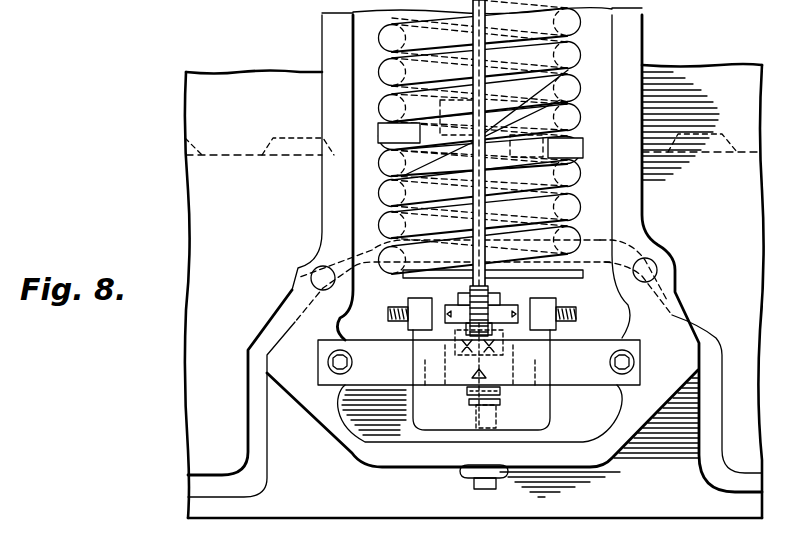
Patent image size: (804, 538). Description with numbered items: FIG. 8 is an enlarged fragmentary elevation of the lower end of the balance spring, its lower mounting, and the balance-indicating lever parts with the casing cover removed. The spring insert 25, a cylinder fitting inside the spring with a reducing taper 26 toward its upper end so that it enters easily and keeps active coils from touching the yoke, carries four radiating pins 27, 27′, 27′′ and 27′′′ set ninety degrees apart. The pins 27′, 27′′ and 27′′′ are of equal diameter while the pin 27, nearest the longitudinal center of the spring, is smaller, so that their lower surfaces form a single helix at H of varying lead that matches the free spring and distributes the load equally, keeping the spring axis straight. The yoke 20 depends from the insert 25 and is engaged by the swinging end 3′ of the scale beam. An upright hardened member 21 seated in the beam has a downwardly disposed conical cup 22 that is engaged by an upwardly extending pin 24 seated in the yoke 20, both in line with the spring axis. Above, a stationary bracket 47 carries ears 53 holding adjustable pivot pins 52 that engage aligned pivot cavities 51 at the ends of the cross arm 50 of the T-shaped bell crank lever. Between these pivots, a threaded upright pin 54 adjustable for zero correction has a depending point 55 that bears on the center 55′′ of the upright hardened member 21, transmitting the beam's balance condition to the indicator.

The single helix H is at (642, 63).
The spring insert 25 is at (582, 226).
The reducing taper 26 is at (420, 113).
The pin 27 is at (480, 128).
The pin 27′ is at (576, 140).
The pin 27′′ is at (420, 172).
The pin 27′′′ is at (378, 130).
The stationary bracket 47 is at (570, 376).
The cross arm 50 is at (463, 311).
The pivot pins 52 is at (505, 311).
The ears 53 is at (408, 300).
The depending point 55 is at (470, 345).
The center 55′′ is at (493, 374).
The pivot cavities 51 is at (437, 365).
The upright pin 54 is at (523, 365).
The cup 22 is at (548, 393).
The swinging end 3′ is at (505, 398).
The upwardly extending pin 24 is at (478, 418).
The yoke 20 is at (540, 410).
The upright hardened member 21 is at (445, 388).